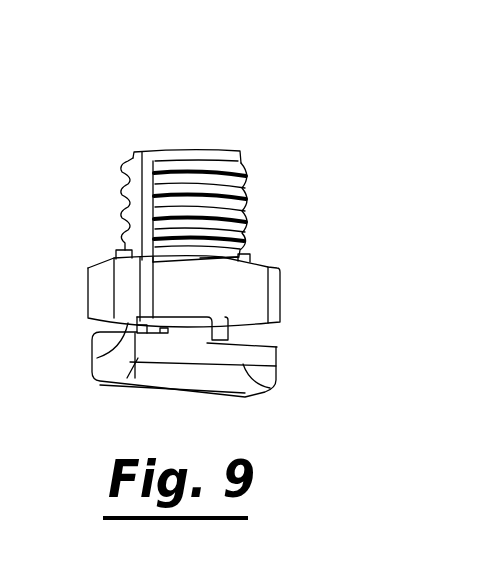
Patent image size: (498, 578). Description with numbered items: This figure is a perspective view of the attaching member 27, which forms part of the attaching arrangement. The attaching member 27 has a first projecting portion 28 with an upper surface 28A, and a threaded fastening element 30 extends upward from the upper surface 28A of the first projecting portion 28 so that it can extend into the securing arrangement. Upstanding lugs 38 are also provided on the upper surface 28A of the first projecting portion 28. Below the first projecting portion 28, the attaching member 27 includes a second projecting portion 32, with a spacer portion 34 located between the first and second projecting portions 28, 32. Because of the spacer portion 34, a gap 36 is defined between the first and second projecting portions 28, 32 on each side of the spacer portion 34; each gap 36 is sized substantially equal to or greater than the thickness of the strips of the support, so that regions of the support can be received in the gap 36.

The attaching member 27 is at (96, 179).
The threaded fastening element 30 is at (235, 149).
The upper surface 28A is at (218, 257).
The upstanding lugs 38 is at (117, 252).
The first projecting portion 28 is at (282, 292).
The spacer portion 34 is at (255, 340).
The second projecting portion 32 is at (253, 383).
The gap 36 is at (92, 358).